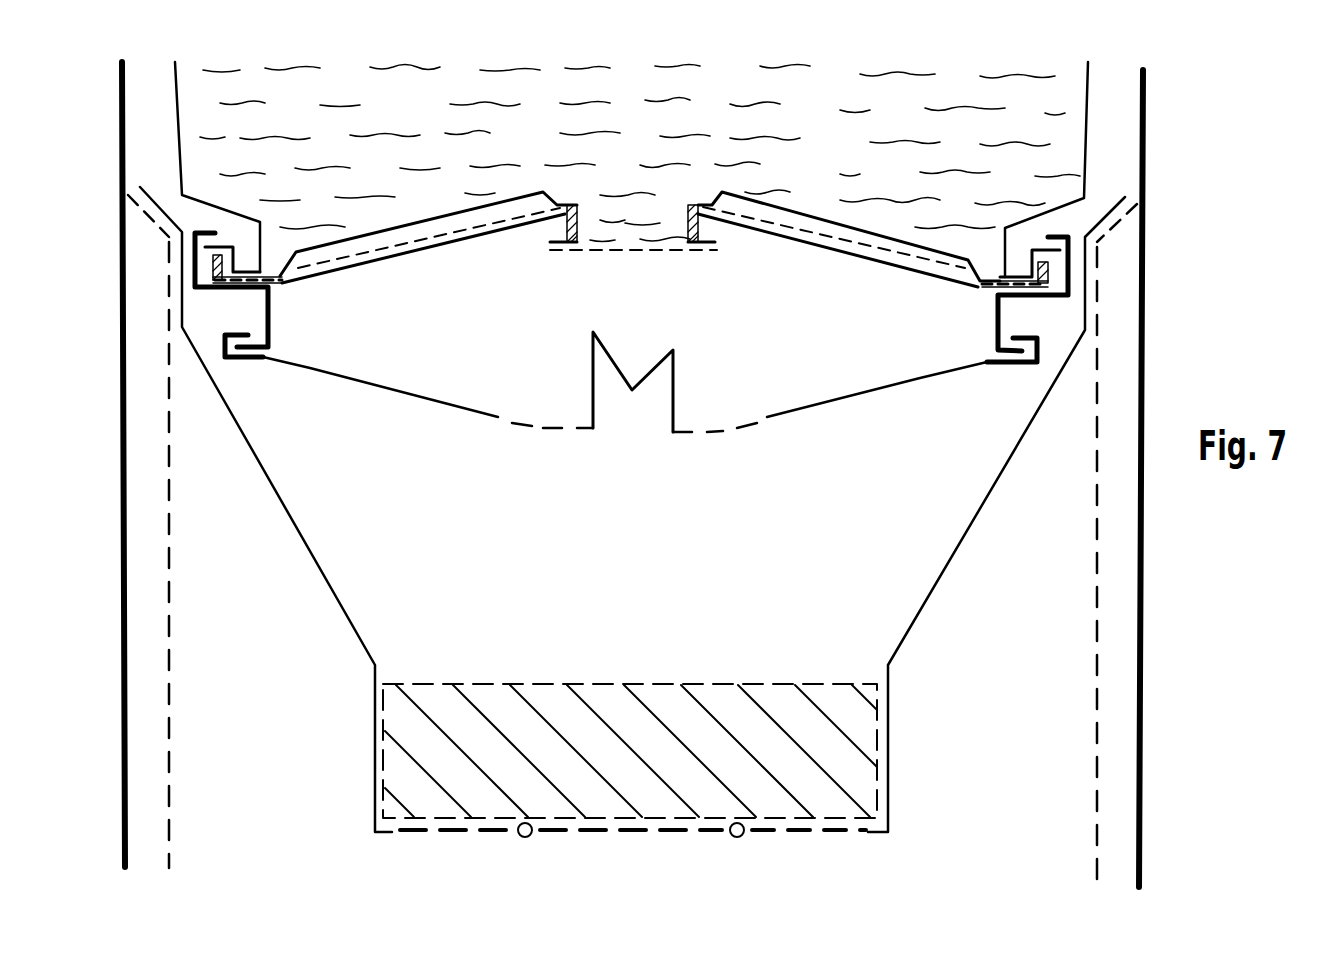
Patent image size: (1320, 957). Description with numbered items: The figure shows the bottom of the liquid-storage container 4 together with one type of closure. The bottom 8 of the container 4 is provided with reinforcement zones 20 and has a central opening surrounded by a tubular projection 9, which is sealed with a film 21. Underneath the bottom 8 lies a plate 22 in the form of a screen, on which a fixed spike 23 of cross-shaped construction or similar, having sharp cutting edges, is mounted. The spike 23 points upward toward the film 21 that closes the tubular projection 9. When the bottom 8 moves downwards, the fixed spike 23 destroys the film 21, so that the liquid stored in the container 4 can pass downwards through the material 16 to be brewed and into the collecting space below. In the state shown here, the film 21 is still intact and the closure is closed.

The liquid-storage container 4 is at (1076, 143).
The bottom 8 is at (927, 270).
The tubular projection 9 is at (557, 238).
The material to be brewed 16 is at (843, 757).
The reinforcement zones 20 is at (867, 240).
The film 21 is at (641, 250).
The plate 22 is at (418, 395).
The spike 23 is at (607, 377).